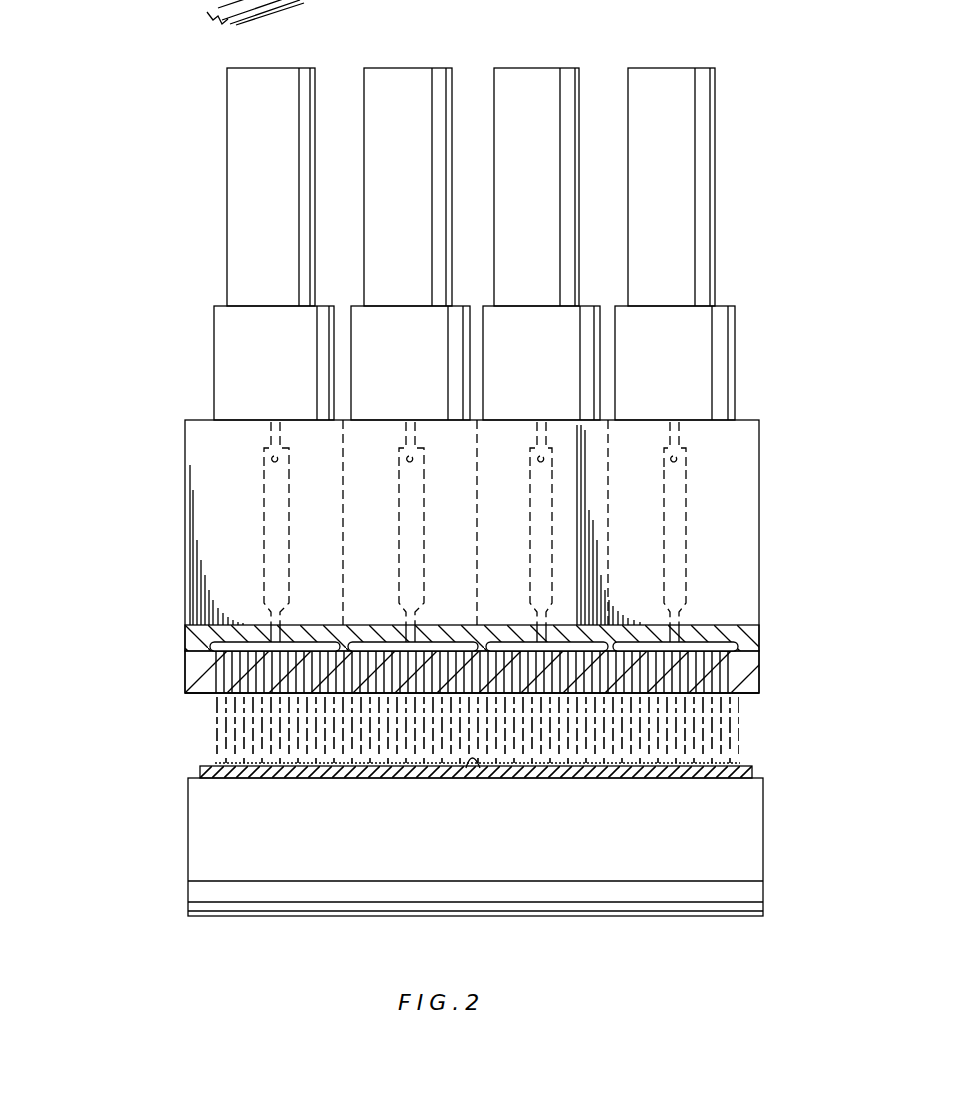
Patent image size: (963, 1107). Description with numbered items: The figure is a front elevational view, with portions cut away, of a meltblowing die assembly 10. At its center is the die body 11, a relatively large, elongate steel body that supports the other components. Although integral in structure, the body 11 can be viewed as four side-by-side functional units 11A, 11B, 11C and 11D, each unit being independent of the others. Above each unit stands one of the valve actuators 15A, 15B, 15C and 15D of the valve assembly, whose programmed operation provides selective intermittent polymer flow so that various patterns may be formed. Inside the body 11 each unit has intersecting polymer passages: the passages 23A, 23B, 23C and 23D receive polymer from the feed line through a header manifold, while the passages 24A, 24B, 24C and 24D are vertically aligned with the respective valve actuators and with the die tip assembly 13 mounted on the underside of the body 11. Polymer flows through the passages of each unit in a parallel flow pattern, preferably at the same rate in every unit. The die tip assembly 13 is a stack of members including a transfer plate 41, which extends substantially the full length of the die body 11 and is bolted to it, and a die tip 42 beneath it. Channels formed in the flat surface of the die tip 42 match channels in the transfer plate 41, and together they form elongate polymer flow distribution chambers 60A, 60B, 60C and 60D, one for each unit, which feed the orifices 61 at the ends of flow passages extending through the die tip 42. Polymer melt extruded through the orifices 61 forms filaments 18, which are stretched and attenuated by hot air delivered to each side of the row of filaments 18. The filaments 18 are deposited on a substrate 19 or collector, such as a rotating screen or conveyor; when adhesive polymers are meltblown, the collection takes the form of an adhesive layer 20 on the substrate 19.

The die assembly 10 is at (197, 326).
The die body 11 is at (185, 462).
The functional unit 11A is at (318, 437).
The functional unit 11B is at (440, 447).
The functional unit 11C is at (565, 447).
The functional unit 11D is at (700, 450).
The die tip assembly 13 is at (186, 697).
The valve actuator 15A is at (246, 146).
The valve actuator 15B is at (418, 117).
The valve actuator 15C is at (537, 118).
The valve actuator 15D is at (680, 108).
The filaments 18 is at (216, 752).
The substrate 19 is at (560, 772).
The adhesive layer 20 is at (465, 770).
The polymer passage 23A is at (268, 460).
The polymer passage 23B is at (406, 465).
The polymer passage 23C is at (536, 463).
The polymer passage 23D is at (670, 460).
The polymer passage 24A is at (290, 543).
The polymer passage 24B is at (423, 532).
The polymer passage 24C is at (546, 508).
The polymer passage 24D is at (686, 530).
The transfer plate 41 is at (200, 645).
The die tip 42 is at (200, 677).
The polymer flow distribution chamber 60A is at (225, 648).
The polymer flow distribution chamber 60B is at (425, 648).
The polymer flow distribution chamber 60C is at (557, 648).
The polymer flow distribution chamber 60D is at (705, 648).
The orifices 61 is at (240, 694).